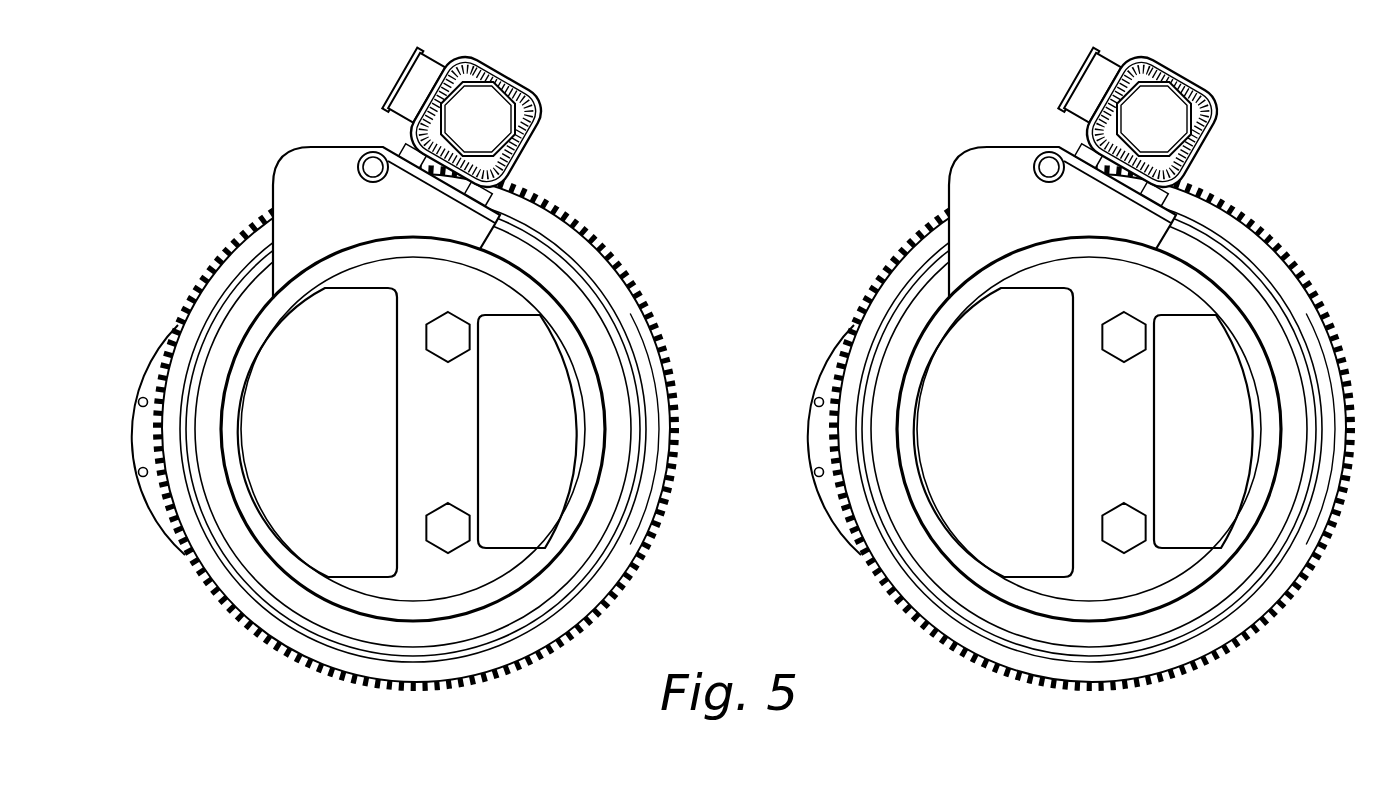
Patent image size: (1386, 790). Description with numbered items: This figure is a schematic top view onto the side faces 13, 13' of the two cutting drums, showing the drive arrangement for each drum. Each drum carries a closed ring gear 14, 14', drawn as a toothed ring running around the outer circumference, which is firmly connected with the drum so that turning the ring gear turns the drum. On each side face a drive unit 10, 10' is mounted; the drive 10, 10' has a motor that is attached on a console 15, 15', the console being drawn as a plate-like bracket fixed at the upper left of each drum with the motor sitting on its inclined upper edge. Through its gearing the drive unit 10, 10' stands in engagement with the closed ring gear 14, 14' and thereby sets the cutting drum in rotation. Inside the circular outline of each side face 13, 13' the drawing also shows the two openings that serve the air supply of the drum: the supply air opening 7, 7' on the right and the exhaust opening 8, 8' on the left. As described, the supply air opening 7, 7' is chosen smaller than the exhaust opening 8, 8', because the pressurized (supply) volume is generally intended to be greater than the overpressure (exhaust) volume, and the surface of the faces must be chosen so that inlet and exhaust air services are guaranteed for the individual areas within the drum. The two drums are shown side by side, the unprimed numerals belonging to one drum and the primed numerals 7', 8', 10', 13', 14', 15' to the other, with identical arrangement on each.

The supply air opening 7 is at (1203, 431).
The supply air opening 7' is at (527, 431).
The exhaust opening 8 is at (993, 432).
The exhaust opening 8' is at (317, 432).
The drive unit 10 is at (1171, 119).
The drive unit 10' is at (486, 114).
The side face 13 is at (1095, 403).
The side face 13' is at (419, 399).
The closed ring gear 14 is at (1110, 428).
The closed ring gear 14' is at (434, 423).
The console 15 is at (1062, 176).
The console 15' is at (386, 176).